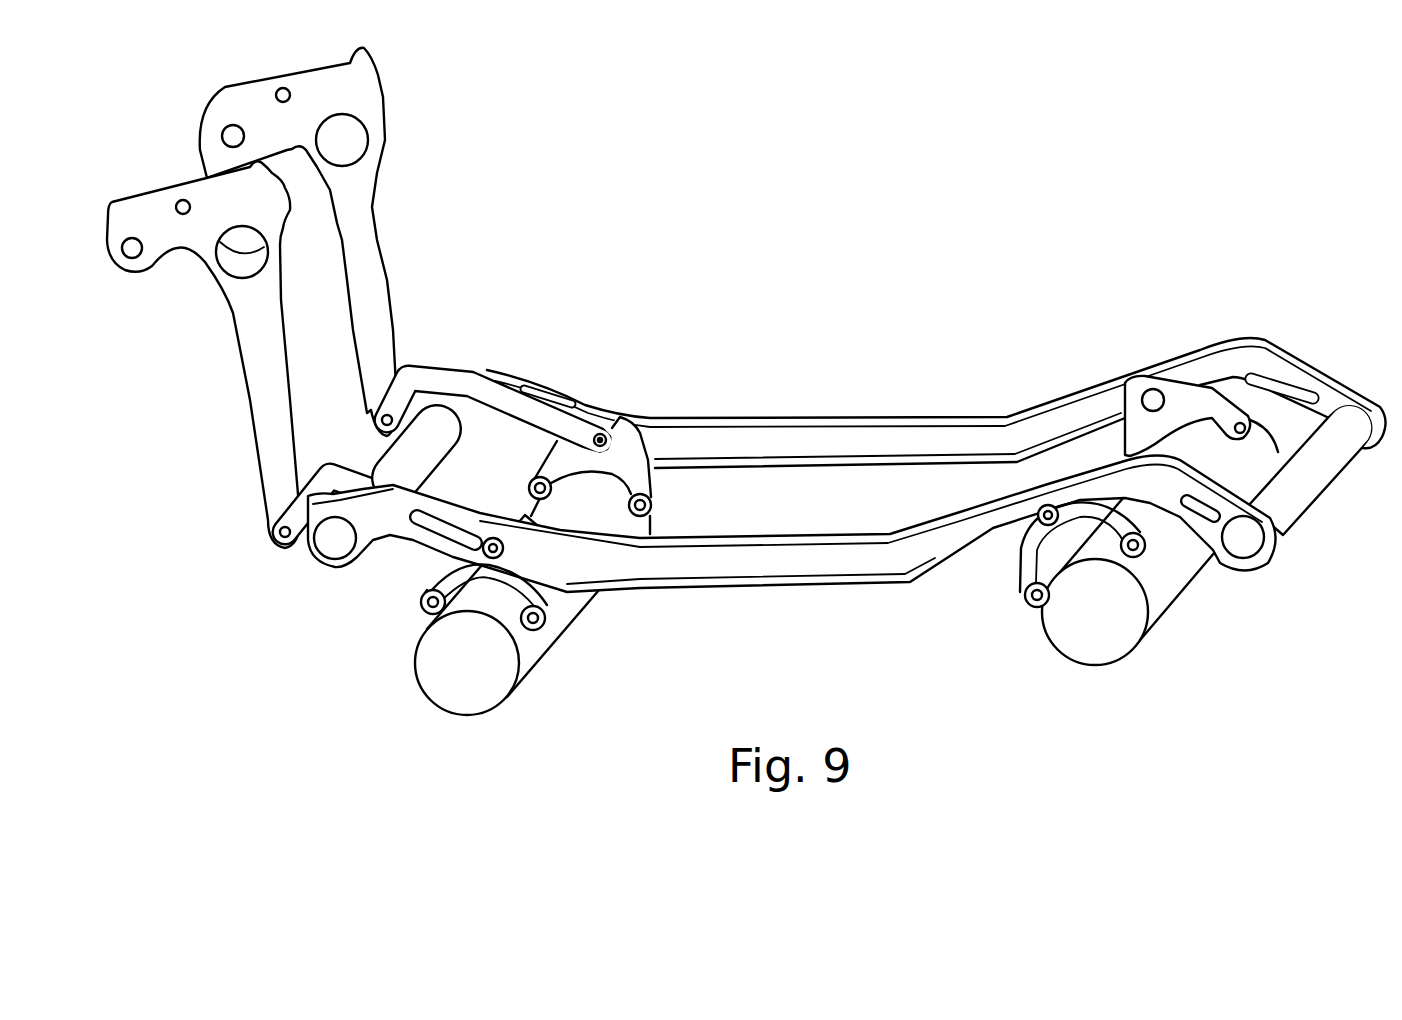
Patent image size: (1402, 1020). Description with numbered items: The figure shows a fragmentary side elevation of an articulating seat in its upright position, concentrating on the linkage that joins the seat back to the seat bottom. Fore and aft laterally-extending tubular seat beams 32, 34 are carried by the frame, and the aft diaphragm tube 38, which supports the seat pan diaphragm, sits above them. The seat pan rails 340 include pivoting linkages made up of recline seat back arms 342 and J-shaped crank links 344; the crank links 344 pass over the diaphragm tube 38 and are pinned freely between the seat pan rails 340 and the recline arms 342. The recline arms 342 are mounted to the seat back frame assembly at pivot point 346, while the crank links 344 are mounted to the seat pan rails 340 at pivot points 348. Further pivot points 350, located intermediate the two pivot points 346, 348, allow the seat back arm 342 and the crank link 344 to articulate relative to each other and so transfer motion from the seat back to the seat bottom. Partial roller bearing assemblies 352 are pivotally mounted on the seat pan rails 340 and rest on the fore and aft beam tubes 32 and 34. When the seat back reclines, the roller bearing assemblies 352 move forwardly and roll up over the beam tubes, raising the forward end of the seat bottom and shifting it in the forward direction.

The fore seat beam 32 is at (1158, 590).
The aft seat beam 34 is at (527, 657).
The aft diaphragm tube 38 is at (412, 457).
The seat pan rail 340 is at (915, 450).
The recline seat back arm 342 is at (367, 257).
The J-shaped crank link 344 is at (440, 368).
The pivot point 346 is at (343, 138).
The pivot point 348 is at (605, 432).
The pivot point 350 is at (378, 423).
The partial roller bearing assembly 352 is at (655, 440).